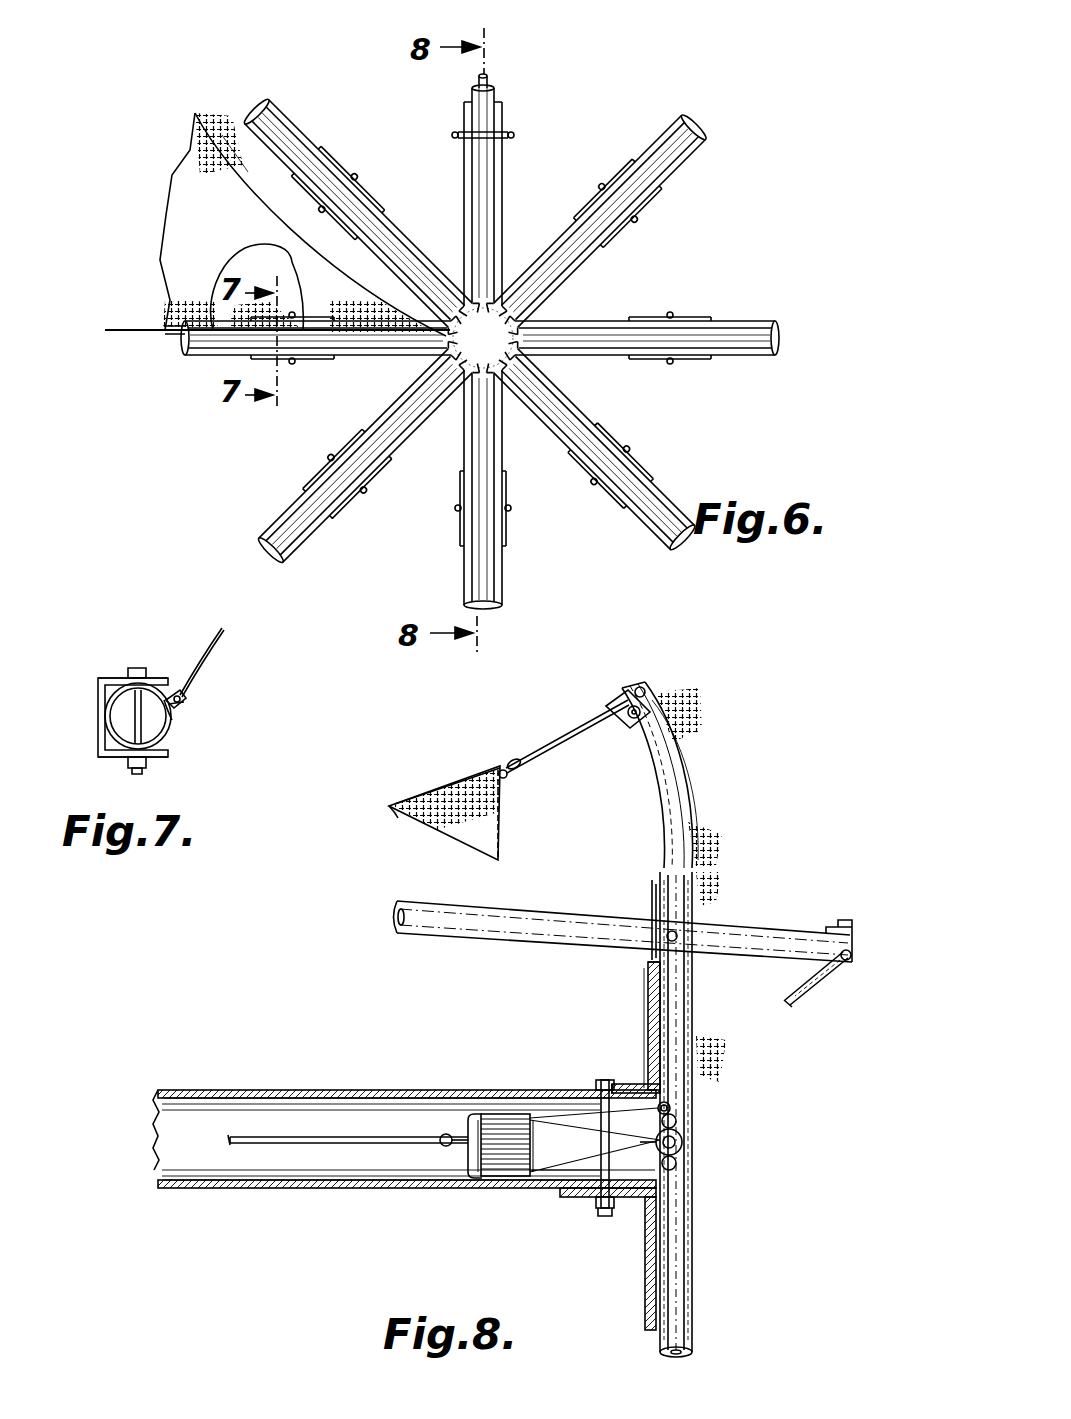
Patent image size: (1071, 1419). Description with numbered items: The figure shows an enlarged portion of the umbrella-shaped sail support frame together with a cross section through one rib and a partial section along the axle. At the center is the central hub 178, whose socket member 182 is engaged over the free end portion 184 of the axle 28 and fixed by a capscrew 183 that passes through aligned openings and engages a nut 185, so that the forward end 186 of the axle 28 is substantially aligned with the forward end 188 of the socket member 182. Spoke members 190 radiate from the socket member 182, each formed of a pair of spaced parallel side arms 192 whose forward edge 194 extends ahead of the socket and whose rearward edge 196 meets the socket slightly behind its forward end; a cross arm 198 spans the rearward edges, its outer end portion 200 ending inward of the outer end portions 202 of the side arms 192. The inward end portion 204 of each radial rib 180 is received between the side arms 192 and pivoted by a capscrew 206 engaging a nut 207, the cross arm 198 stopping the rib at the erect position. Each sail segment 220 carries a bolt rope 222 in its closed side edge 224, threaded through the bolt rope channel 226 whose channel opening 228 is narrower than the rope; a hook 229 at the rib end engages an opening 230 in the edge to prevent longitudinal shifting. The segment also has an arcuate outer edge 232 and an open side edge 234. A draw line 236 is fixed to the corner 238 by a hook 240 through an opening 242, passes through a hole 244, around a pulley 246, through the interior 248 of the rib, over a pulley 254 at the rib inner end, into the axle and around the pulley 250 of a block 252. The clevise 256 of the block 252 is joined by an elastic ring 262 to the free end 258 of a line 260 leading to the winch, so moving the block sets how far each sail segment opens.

In FIG. 8, the axle 28 is at (328, 1086).
In FIG. 6, the central hub 178 is at (532, 366).
In FIG. 8, the central hub 178 is at (598, 1084).
In FIG. 8, the radial rib 180 is at (682, 790).
In FIG. 8, the socket member 182 is at (582, 1094).
In FIG. 8, the capscrew 183 is at (606, 1082).
In FIG. 8, the free end portion of axle 184 is at (562, 1098).
In FIG. 8, the nut 185 is at (582, 1198).
In FIG. 8, the forward end of axle 186 is at (614, 1216).
In FIG. 8, the forward end of hub socket member 188 is at (650, 1222).
In FIG. 6, the spoke member 190 is at (645, 235).
In FIG. 8, the spoke member 190 is at (652, 905).
In FIG. 6, the side arm 192 is at (576, 232).
In FIG. 7, the side arm 192 is at (104, 676).
In FIG. 8, the side arm 192 is at (660, 945).
In FIG. 8, the forward edge of side arm 194 is at (694, 1036).
In FIG. 8, the rearward edge of side arm 196 is at (648, 992).
In FIG. 7, the cross arm 198 is at (102, 735).
In FIG. 8, the cross arm 198 is at (648, 1016).
In FIG. 8, the outer end portion of cross arm 200 is at (650, 966).
In FIG. 6, the outer end portion of side arm 202 is at (635, 158).
In FIG. 8, the outer end portion of side arm 202 is at (660, 900).
In FIG. 6, the inward end portion of radial rib 204 is at (565, 282).
In FIG. 7, the inward end portion of radial rib 204 is at (170, 745).
In FIG. 8, the inward end portion of radial rib 204 is at (680, 974).
In FIG. 6, the capscrew 206 is at (650, 208).
In FIG. 7, the capscrew 206 is at (137, 668).
In FIG. 8, the capscrew 206 is at (690, 935).
In FIG. 7, the nut 207 is at (144, 766).
In FIG. 6, the sail segment 220 is at (172, 200).
In FIG. 7, the sail segment 220 is at (222, 642).
In FIG. 8, the sail segment 220 is at (452, 832).
In FIG. 6, the bolt rope 222 is at (136, 330).
In FIG. 7, the bolt rope 222 is at (184, 708).
In FIG. 6, the closed side edge 224 is at (182, 346).
In FIG. 7, the bolt rope channel 226 is at (176, 724).
In FIG. 7, the channel opening 228 is at (186, 698).
In FIG. 6, the hook 229 is at (445, 305).
In FIG. 8, the hook 229 is at (648, 690).
In FIG. 6, the opening 230 is at (412, 356).
In FIG. 8, the outer edge 232 is at (412, 808).
In FIG. 6, the open side edge 234 is at (224, 118).
In FIG. 8, the open side edge 234 is at (500, 832).
In FIG. 6, the draw line 236 is at (490, 82).
In FIG. 8, the draw line 236 is at (582, 722).
In FIG. 8, the corner 238 is at (470, 790).
In FIG. 8, the hook 240 is at (514, 757).
In FIG. 8, the opening 242 is at (506, 780).
In FIG. 8, the hole 244 is at (640, 708).
In FIG. 8, the pulley 246 is at (630, 722).
In FIG. 8, the interior of radial rib 248 is at (690, 808).
In FIG. 8, the pulley 250 is at (482, 1118).
In FIG. 8, the block 252 is at (470, 1126).
In FIG. 8, the pulley 254 is at (684, 1143).
In FIG. 8, the clevise 256 is at (476, 1180).
In FIG. 8, the free end of line 258 is at (398, 1150).
In FIG. 8, the line 260 is at (236, 1136).
In FIG. 8, the elastic ring 262 is at (442, 1160).